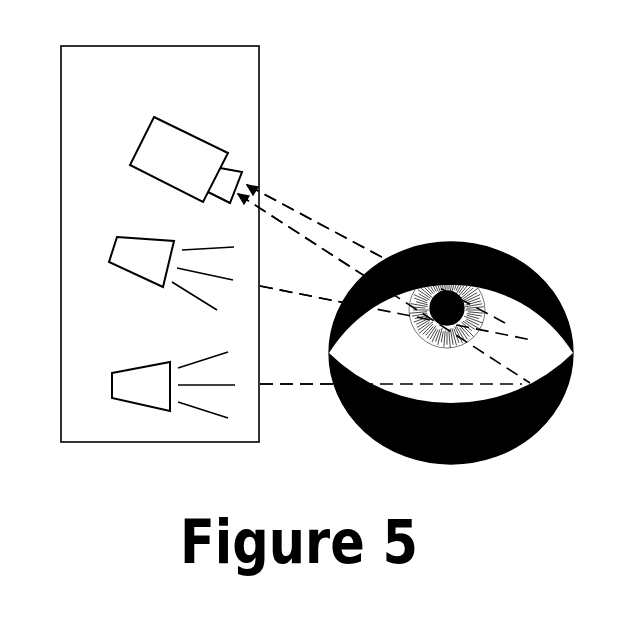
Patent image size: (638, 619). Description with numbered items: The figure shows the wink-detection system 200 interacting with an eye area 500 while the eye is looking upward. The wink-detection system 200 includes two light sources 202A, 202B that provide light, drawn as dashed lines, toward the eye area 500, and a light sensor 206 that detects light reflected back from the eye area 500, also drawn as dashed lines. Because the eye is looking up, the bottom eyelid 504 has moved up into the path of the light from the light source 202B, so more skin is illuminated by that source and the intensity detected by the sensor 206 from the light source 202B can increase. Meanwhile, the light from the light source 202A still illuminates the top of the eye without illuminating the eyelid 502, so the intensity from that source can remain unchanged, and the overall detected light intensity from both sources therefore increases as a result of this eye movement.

The wink-detection system 200 is at (107, 46).
The light sensor 206 is at (163, 117).
The light source 202A is at (167, 237).
The light source 202B is at (160, 362).
The eye area 500 is at (405, 294).
The eyelid 502 is at (497, 248).
The bottom eyelid 504 is at (493, 458).